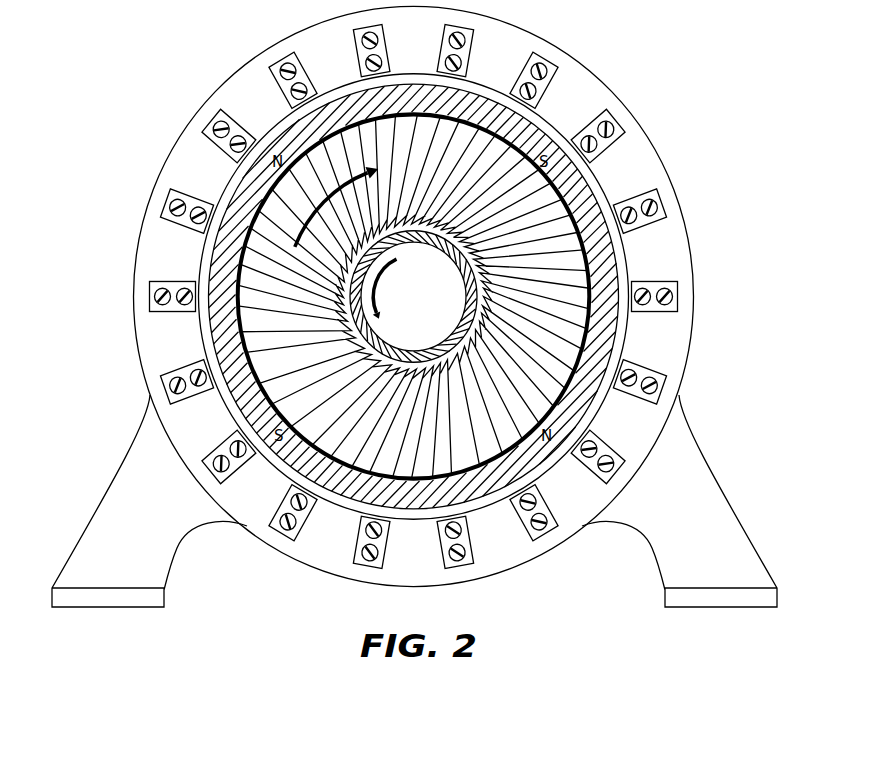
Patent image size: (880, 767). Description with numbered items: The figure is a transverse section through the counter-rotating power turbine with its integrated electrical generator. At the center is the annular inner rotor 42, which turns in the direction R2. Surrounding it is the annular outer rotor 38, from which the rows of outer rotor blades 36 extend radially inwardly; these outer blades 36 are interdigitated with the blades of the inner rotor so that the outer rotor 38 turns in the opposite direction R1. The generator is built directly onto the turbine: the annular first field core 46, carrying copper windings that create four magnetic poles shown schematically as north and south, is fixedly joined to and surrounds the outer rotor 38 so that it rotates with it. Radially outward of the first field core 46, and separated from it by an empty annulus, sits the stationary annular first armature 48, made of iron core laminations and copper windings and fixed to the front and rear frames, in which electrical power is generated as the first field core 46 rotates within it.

The outer rotor blades 36 is at (522, 327).
The outer rotor 38 is at (240, 263).
The inner rotor 42 is at (404, 350).
The first field core 46 is at (623, 260).
The first armature 48 is at (587, 67).
The rotation direction of outer rotor R1 is at (340, 158).
The rotation direction of inner rotor R2 is at (388, 282).